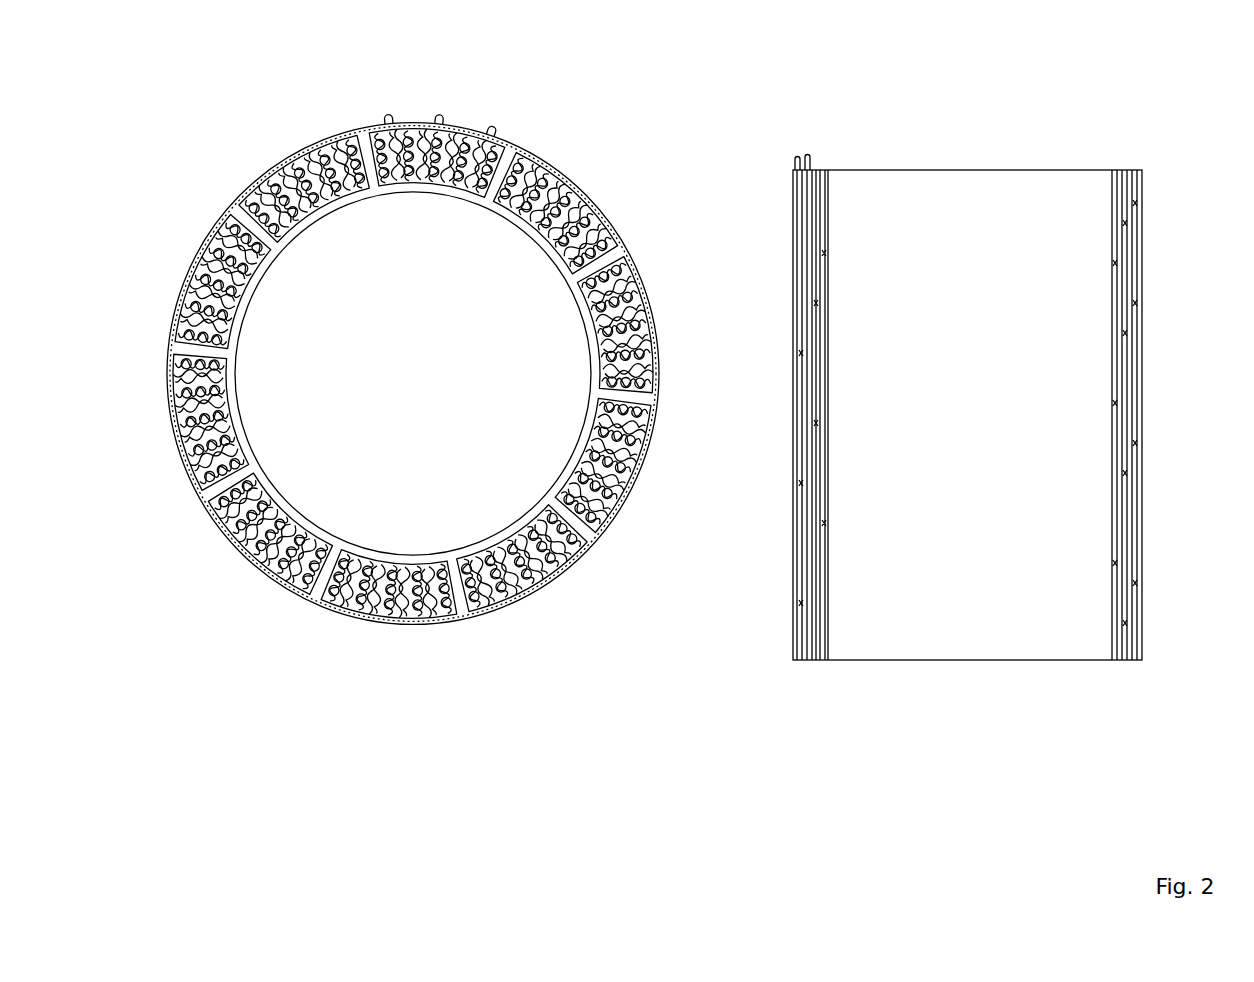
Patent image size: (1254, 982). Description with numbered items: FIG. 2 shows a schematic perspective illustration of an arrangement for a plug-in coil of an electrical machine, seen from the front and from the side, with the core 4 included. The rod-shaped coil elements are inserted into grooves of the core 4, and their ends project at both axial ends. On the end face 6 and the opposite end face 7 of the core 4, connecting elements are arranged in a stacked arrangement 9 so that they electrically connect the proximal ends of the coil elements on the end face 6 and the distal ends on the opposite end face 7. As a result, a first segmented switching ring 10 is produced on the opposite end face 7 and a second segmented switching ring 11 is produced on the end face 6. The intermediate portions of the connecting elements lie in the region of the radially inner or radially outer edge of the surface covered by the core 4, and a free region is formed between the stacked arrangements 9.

The core 4 is at (990, 196).
The end face 6 is at (1112, 217).
The opposite end face 7 is at (828, 230).
The stacked arrangement 9 is at (1130, 305).
The first segmented switching ring 10 is at (808, 545).
The second segmented switching ring 11 is at (1137, 382).